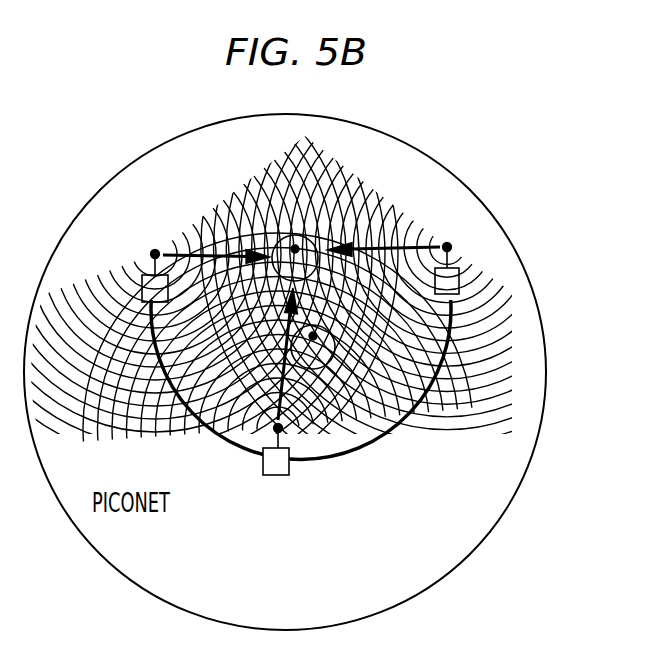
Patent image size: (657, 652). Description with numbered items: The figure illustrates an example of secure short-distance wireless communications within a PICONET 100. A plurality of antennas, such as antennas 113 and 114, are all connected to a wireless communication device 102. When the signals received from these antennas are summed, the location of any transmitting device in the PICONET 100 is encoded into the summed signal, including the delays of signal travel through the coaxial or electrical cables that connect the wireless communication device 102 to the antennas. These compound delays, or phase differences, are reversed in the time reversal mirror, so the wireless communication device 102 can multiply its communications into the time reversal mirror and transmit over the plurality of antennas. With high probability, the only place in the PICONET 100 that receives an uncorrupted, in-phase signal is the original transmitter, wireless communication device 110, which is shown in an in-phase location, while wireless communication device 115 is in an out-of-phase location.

The PICONET 100 is at (539, 423).
The wireless communication device 102 is at (288, 476).
The wireless communication device 110 is at (278, 236).
The antenna 113 is at (150, 302).
The antenna 114 is at (453, 297).
The wireless communication device 115 is at (337, 345).